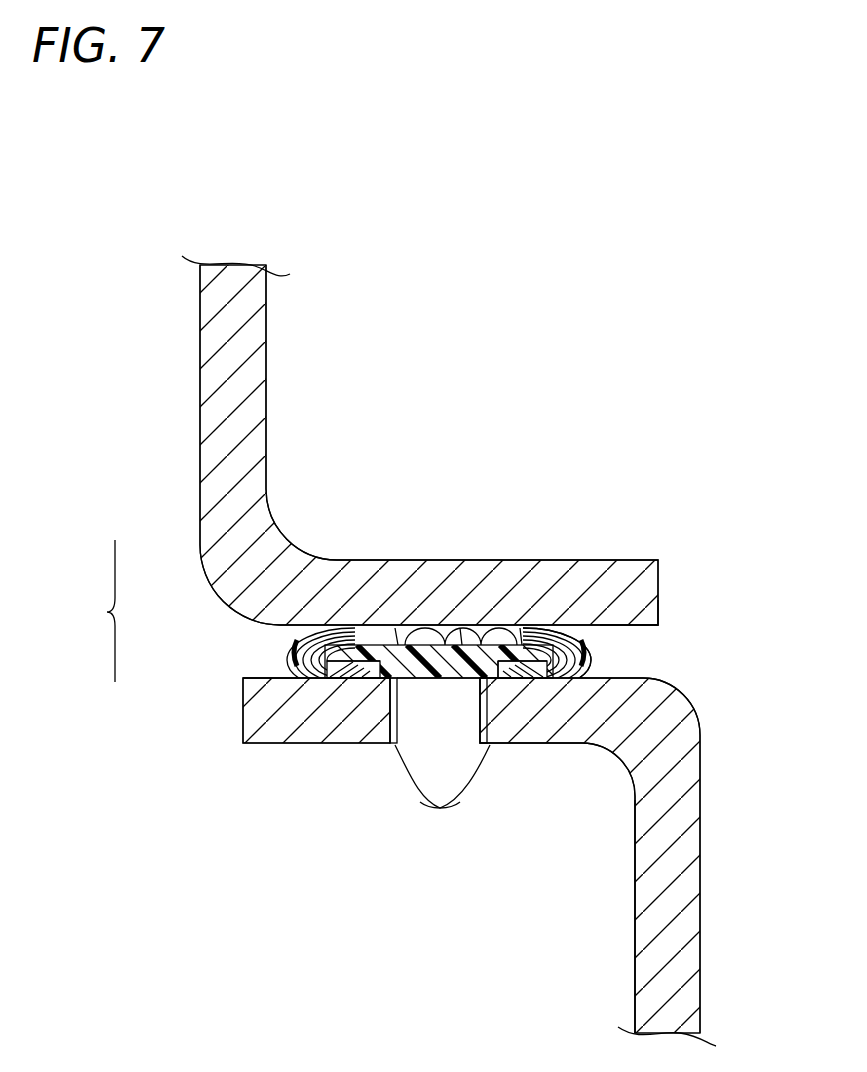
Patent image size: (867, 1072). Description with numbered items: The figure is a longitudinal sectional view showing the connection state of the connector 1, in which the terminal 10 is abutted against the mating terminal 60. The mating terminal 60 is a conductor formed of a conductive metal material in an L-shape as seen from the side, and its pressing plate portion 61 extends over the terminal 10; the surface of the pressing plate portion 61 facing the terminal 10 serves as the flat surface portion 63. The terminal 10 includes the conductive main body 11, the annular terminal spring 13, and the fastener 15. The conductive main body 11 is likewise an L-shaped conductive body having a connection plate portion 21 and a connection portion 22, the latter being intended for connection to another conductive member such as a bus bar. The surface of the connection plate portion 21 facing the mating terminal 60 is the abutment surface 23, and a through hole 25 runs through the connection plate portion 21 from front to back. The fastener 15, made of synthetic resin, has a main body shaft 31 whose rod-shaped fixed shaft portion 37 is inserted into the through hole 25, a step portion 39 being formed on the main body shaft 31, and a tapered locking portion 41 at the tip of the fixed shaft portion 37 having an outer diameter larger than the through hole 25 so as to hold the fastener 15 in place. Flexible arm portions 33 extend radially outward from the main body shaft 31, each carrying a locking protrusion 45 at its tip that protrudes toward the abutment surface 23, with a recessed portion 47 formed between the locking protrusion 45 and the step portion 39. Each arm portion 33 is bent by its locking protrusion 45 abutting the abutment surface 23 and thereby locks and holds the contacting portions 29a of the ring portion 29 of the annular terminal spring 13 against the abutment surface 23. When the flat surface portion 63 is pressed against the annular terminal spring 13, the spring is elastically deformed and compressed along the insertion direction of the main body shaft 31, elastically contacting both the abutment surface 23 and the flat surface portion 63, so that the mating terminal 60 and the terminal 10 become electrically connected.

The connector 1 is at (100, 623).
The terminal 10 is at (232, 717).
The conductive main body 11 is at (632, 918).
The annular terminal spring 13 is at (594, 637).
The fastener 15 is at (463, 634).
The connection plate portion 21 is at (262, 743).
The connection portion 22 is at (688, 893).
The abutment surface 23 is at (250, 677).
The through hole 25 is at (420, 682).
The ring portion 29 is at (591, 652).
The contacting portions 29a is at (347, 673).
The main body shaft 31 is at (401, 662).
The arm portions 33 is at (350, 656).
The fixed shaft portion 37 is at (502, 745).
The step portion 39 is at (415, 700).
The locking portion 41 is at (458, 803).
The locking protrusion 45 is at (337, 678).
The recessed portion 47 is at (537, 671).
The mating terminal 60 is at (188, 490).
The pressing plate portion 61 is at (648, 587).
The flat surface portion 63 is at (640, 625).